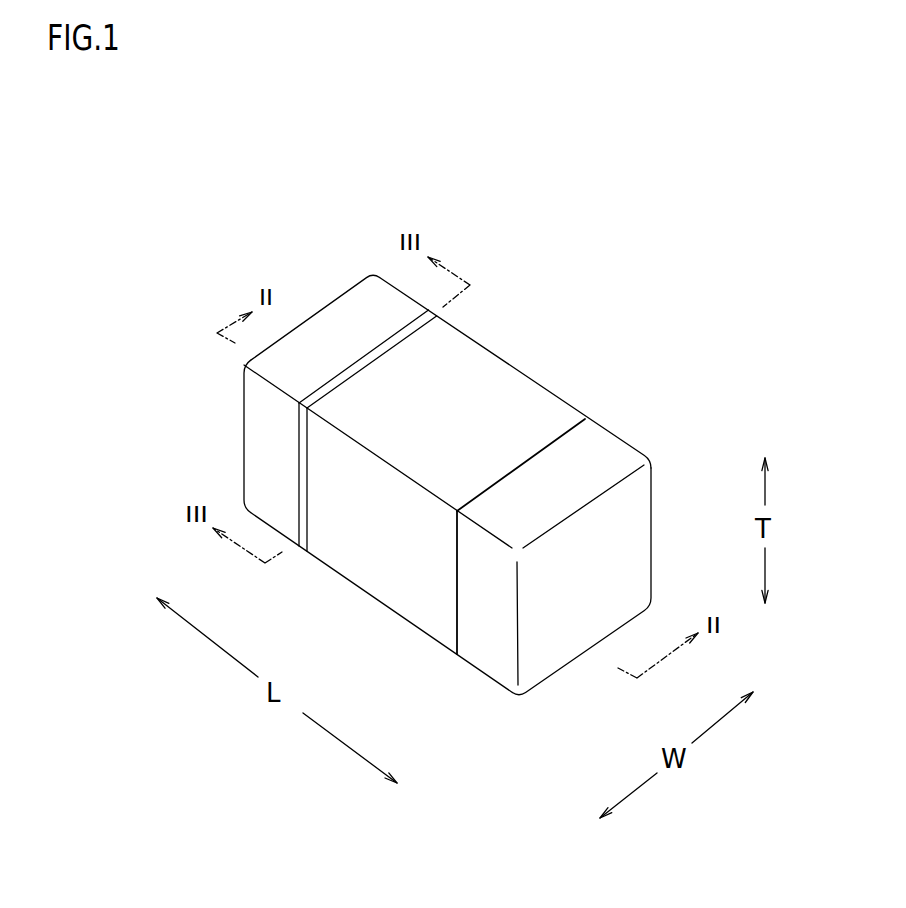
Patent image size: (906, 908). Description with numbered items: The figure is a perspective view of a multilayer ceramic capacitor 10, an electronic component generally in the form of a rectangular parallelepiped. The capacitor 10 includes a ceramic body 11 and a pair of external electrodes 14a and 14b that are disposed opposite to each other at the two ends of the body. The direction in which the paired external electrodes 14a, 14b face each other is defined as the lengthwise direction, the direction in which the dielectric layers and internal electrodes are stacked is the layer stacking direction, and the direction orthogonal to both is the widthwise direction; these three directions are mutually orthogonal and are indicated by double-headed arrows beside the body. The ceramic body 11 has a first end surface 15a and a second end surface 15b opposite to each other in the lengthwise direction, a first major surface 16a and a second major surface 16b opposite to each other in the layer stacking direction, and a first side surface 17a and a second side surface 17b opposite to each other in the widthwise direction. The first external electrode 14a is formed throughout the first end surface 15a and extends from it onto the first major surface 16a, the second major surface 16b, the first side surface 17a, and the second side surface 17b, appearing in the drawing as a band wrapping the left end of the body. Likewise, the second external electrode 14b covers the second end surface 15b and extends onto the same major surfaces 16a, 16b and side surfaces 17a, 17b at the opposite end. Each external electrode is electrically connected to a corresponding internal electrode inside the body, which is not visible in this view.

The multilayer ceramic capacitor 10 is at (630, 281).
The ceramic body 11 is at (492, 382).
The first external electrode 14a is at (347, 312).
The second external electrode 14b is at (612, 445).
The first end surface 15a is at (277, 433).
The second end surface 15b is at (532, 617).
The first major surface 16a is at (537, 408).
The second major surface 16b is at (432, 612).
The first side surface 17a is at (387, 563).
The second side surface 17b is at (556, 421).